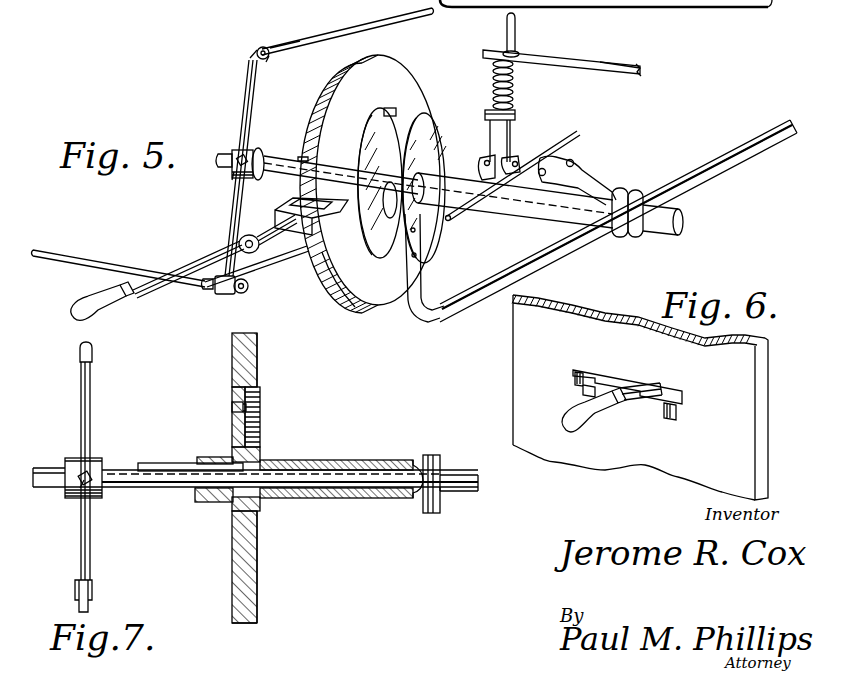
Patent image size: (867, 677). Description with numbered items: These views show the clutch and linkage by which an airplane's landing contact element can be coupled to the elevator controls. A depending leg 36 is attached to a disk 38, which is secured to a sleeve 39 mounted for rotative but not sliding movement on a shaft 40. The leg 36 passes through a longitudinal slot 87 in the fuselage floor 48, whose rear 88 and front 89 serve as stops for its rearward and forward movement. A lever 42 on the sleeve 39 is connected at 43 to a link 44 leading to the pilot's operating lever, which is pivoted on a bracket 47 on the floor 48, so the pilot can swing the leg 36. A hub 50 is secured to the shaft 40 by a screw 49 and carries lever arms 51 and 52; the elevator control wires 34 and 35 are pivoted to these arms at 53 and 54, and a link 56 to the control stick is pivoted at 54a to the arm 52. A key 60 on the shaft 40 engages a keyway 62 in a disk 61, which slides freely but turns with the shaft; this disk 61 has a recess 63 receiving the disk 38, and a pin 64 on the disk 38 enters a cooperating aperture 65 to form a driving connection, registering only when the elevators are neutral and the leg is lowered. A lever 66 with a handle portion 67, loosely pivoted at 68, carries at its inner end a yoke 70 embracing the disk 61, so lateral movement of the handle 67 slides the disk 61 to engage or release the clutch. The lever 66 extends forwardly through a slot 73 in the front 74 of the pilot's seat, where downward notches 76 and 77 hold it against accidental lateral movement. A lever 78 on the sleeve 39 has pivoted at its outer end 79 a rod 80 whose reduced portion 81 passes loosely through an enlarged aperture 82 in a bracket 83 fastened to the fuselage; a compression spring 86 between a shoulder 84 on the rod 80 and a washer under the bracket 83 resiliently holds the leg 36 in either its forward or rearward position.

In FIG. 5, the control wire 34 is at (316, 47).
In FIG. 5, the control wire 35 is at (282, 262).
In FIG. 5, the depending leg 36 is at (705, 185).
In FIG. 5, the disk 38 is at (446, 160).
In FIG. 7, the disk 38 is at (262, 430).
In FIG. 5, the sleeve 39 is at (527, 208).
In FIG. 7, the sleeve 39 is at (416, 460).
In FIG. 5, the shaft 40 is at (668, 236).
In FIG. 7, the shaft 40 is at (125, 466).
In FIG. 5, the lever 42 is at (588, 176).
In FIG. 5, the connection 43 is at (574, 160).
In FIG. 5, the link 44 is at (442, 218).
In FIG. 5, the bracket 47 is at (176, 0).
In FIG. 5, the floor 48 is at (222, 0).
In FIG. 5, the screw 49 is at (236, 172).
In FIG. 7, the screw 49 is at (80, 490).
In FIG. 5, the hub 50 is at (238, 148).
In FIG. 7, the hub 50 is at (72, 458).
In FIG. 5, the lever arm 51 is at (246, 88).
In FIG. 7, the lever arm 51 is at (90, 412).
In FIG. 5, the lever arm 52 is at (280, 212).
In FIG. 7, the lever arm 52 is at (90, 541).
In FIG. 5, the pivot 53 is at (266, 62).
In FIG. 5, the pivot 54 is at (244, 293).
In FIG. 5, the pivot 54a is at (226, 296).
In FIG. 5, the link 56 is at (135, 260).
In FIG. 5, the key 60 is at (305, 156).
In FIG. 7, the key 60 is at (176, 462).
In FIG. 5, the disk 61 is at (412, 90).
In FIG. 7, the disk 61 is at (260, 365).
In FIG. 5, the keyway 62 is at (368, 150).
In FIG. 5, the recess 63 is at (340, 304).
In FIG. 5, the pin 64 is at (386, 212).
In FIG. 7, the pin 64 is at (240, 412).
In FIG. 5, the aperture 65 is at (383, 112).
In FIG. 7, the aperture 65 is at (228, 407).
In FIG. 5, the lever 66 is at (165, 283).
In FIG. 6, the lever 66 is at (635, 386).
In FIG. 5, the handle portion 67 is at (122, 318).
In FIG. 6, the handle portion 67 is at (583, 437).
In FIG. 5, the pivot 68 is at (239, 242).
In FIG. 5, the yoke 70 is at (288, 234).
In FIG. 6, the slot 73 is at (592, 372).
In FIG. 6, the front of pilot's seat 74 is at (513, 365).
In FIG. 6, the notch 76 is at (580, 397).
In FIG. 6, the notch 77 is at (670, 420).
In FIG. 5, the lever 78 is at (550, 150).
In FIG. 5, the outer end 79 is at (516, 160).
In FIG. 5, the rod 80 is at (490, 130).
In FIG. 5, the reduced portion 81 is at (516, 36).
In FIG. 5, the enlarged aperture 82 is at (522, 52).
In FIG. 5, the bracket 83 is at (602, 60).
In FIG. 5, the shoulder 84 is at (488, 110).
In FIG. 5, the compression spring 86 is at (515, 86).
In FIG. 5, the longitudinal slot 87 is at (382, 0).
In FIG. 5, the rear of slot 88 is at (452, 9).
In FIG. 5, the front of slot 89 is at (331, 0).